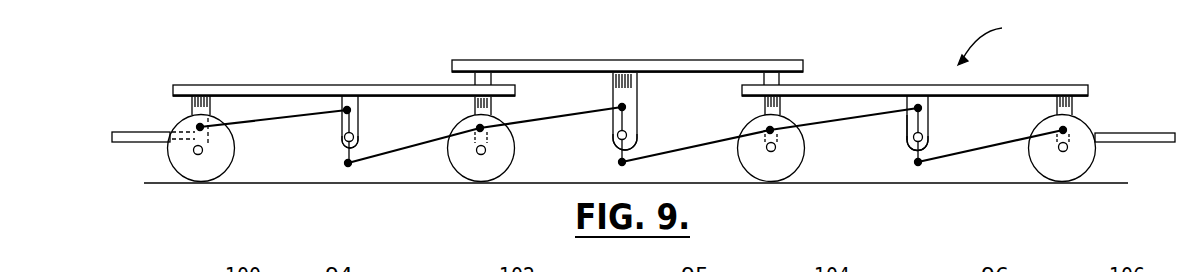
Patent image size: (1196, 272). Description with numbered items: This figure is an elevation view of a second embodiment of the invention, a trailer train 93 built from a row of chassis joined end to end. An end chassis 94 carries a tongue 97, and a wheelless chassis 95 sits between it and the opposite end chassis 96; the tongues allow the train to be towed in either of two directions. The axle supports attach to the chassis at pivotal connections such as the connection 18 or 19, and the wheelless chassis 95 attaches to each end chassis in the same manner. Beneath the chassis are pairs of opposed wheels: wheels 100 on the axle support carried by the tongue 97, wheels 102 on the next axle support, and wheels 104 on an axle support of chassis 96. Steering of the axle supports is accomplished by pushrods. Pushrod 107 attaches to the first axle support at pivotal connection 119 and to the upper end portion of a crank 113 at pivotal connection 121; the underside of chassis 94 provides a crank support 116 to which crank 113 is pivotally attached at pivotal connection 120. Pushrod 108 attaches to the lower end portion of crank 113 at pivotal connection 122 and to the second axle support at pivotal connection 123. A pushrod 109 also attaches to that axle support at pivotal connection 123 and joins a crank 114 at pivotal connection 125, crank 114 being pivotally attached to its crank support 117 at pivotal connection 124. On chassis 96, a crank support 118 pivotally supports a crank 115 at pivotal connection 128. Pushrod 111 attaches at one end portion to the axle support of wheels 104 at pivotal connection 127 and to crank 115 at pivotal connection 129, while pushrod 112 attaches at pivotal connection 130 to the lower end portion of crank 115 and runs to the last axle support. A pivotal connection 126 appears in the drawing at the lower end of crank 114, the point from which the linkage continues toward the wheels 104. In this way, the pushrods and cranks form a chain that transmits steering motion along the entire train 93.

The pivotal connection 18 is at (480, 78).
The pivotal connection 19 is at (773, 78).
The trailer train 93 is at (995, 39).
The chassis 94 is at (368, 85).
The chassis 95 is at (607, 61).
The chassis 96 is at (1042, 85).
The tongue 97 is at (140, 132).
The wheels 100 is at (219, 163).
The wheels 102 is at (477, 173).
The wheels 104 is at (762, 167).
The pushrod 107 is at (242, 117).
The pushrod 108 is at (428, 147).
The pushrod 109 is at (509, 181).
The pushrod 111 is at (636, 208).
The pushrod 112 is at (1010, 143).
The crank 113 is at (342, 125).
The crank 114 is at (637, 120).
The crank 115 is at (930, 113).
The crank support 116 is at (358, 113).
The crank support 117 is at (613, 97).
The crank support 118 is at (907, 125).
The pivotal connection 119 is at (184, 117).
The pivotal connection 120 is at (345, 150).
The pivotal connection 121 is at (362, 100).
The pivotal connection 122 is at (350, 163).
The pivotal connection 123 is at (485, 124).
The pivotal connection 124 is at (615, 147).
The pivotal connection 125 is at (637, 85).
The pivot pin 126 is at (627, 163).
The pivotal connection 127 is at (780, 120).
The pivotal connection 128 is at (905, 147).
The pivotal connection 129 is at (915, 100).
The pivotal connection 130 is at (918, 166).